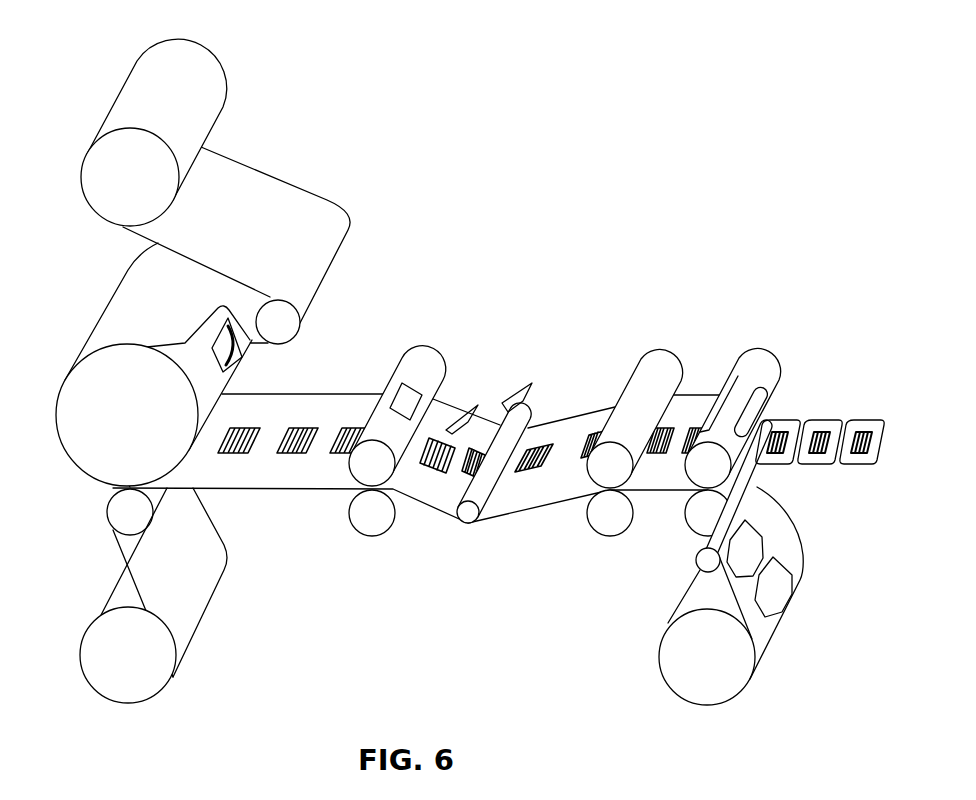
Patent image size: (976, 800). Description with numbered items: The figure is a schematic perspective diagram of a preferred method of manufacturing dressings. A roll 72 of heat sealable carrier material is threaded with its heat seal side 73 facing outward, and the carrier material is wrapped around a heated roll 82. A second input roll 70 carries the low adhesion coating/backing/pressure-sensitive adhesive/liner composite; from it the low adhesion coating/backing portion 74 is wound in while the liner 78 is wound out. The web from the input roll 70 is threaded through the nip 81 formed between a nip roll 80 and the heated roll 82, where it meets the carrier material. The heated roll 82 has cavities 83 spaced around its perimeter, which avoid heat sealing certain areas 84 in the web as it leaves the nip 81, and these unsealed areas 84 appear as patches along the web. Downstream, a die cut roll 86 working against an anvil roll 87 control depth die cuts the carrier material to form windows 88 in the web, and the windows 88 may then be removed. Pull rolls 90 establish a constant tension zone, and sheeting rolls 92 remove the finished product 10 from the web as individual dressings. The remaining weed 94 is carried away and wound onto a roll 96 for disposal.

The finished product 10 is at (872, 425).
The second input roll 70 is at (150, 682).
The roll 72 is at (210, 68).
The heat seal side 73 is at (117, 310).
The low adhesion coating/backing portion 74 is at (147, 595).
The liner 78 is at (207, 553).
The nip roll 80 is at (120, 510).
The nip 81 is at (88, 466).
The heated roll 82 is at (75, 405).
The cavities 83 is at (232, 357).
The areas 84 is at (301, 432).
The die cut roll 86 is at (423, 355).
The anvil roll 87 is at (378, 522).
The windows 88 is at (513, 393).
The pull rolls 90 is at (658, 355).
The sheeting rolls 92 is at (758, 377).
The weed 94 is at (797, 545).
The roll 96 is at (732, 680).